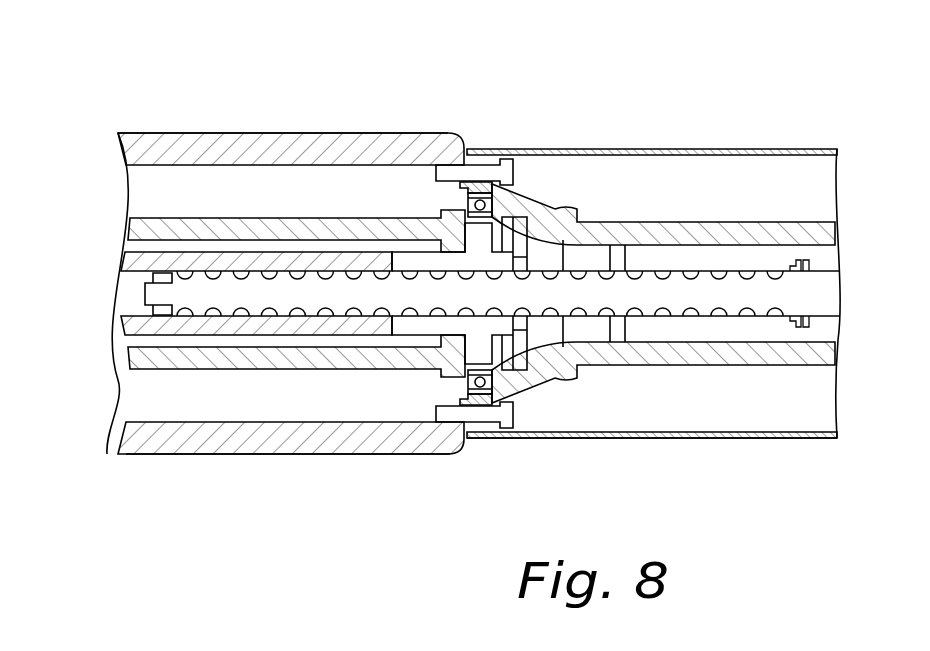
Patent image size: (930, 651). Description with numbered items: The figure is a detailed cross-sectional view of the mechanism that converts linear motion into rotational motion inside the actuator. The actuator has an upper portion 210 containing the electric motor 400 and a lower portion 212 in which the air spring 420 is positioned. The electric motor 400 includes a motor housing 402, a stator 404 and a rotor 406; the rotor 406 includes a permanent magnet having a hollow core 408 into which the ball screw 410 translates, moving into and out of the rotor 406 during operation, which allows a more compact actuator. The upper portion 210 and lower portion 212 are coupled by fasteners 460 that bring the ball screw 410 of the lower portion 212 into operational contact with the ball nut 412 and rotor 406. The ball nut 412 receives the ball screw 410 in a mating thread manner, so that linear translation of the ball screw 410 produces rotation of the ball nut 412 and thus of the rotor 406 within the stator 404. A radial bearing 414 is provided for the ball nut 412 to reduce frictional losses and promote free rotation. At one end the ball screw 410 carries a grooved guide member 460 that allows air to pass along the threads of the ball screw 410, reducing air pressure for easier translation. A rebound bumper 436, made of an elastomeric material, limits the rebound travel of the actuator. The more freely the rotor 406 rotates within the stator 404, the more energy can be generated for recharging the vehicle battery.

The electric motor 400 is at (256, 112).
The motor housing 402 is at (186, 133).
The stator 404 is at (318, 185).
The rotor 406 is at (373, 230).
The hollow core 408 is at (122, 300).
The ball screw 410 is at (829, 293).
The ball nut 412 is at (480, 262).
The radial bearing 414 is at (481, 195).
The air spring 420 is at (714, 116).
The rebound bumper 436 is at (812, 265).
The fasteners 460 is at (510, 172).
The upper portion 210 is at (297, 470).
The lower portion 212 is at (741, 473).